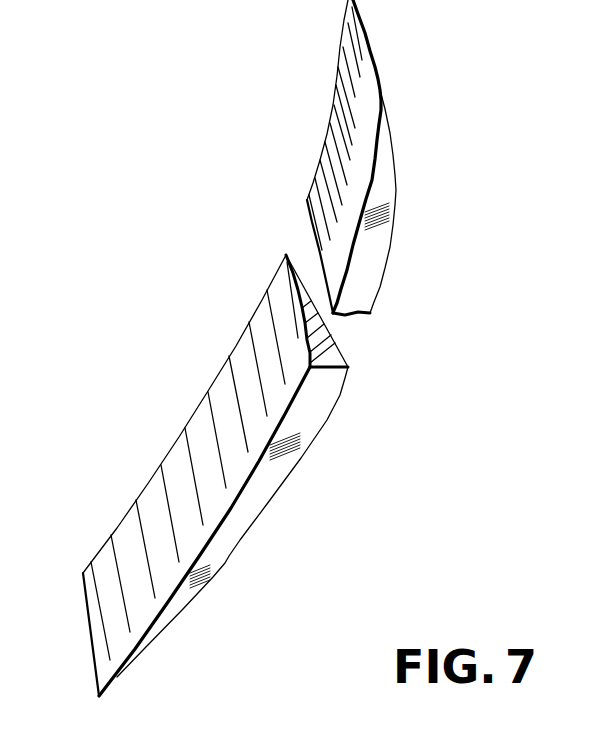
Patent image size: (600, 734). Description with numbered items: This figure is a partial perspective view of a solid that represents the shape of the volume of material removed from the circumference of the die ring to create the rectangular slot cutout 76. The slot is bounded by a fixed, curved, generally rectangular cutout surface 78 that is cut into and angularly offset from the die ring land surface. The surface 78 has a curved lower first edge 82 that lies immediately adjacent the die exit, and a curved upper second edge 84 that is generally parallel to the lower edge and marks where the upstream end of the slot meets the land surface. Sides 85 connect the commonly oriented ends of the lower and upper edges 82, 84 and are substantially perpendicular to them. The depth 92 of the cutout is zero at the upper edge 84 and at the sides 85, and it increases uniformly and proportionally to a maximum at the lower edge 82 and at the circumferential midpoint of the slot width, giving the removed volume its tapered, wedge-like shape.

The rectangular slot cutout 76 is at (325, 433).
The rectangular cutout surface 78 is at (333, 340).
The lower first edge 82 is at (183, 612).
The upper second edge 84 is at (177, 447).
The sides 85 is at (368, 39).
The depth 92 is at (277, 384).